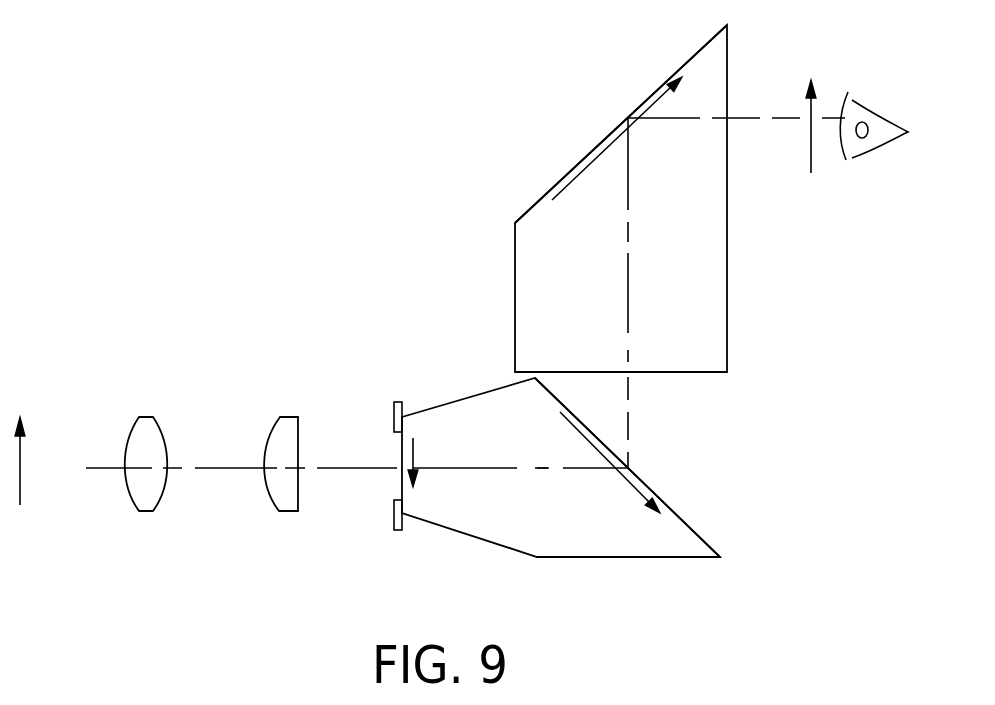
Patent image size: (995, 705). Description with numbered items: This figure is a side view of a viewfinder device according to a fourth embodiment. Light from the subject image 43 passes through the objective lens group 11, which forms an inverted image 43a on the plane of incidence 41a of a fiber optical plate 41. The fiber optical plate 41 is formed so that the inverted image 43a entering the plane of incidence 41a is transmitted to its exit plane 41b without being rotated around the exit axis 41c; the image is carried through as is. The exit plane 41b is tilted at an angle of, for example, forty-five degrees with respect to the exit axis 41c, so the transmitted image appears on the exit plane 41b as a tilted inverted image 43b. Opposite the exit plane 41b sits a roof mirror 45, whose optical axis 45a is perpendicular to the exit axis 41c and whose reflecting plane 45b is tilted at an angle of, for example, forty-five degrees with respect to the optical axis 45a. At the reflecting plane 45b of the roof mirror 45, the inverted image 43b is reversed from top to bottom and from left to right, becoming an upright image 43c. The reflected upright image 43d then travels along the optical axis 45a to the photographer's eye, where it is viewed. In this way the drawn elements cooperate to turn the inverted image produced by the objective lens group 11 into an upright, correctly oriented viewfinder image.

The objective lens group 11 is at (312, 412).
The fiber optical plate 41 is at (475, 520).
The plane of incidence 41a is at (400, 484).
The exit plane 41b is at (702, 535).
The exit axis 41c is at (543, 466).
The subject image 43 is at (20, 446).
The inverted image 43a is at (420, 469).
The inverted image 43b is at (630, 483).
The upright image 43c is at (594, 160).
The reflected upright image 43d is at (811, 147).
The roof mirror 45 is at (700, 302).
The optical axis 45a is at (628, 333).
The reflecting plane 45b is at (544, 205).